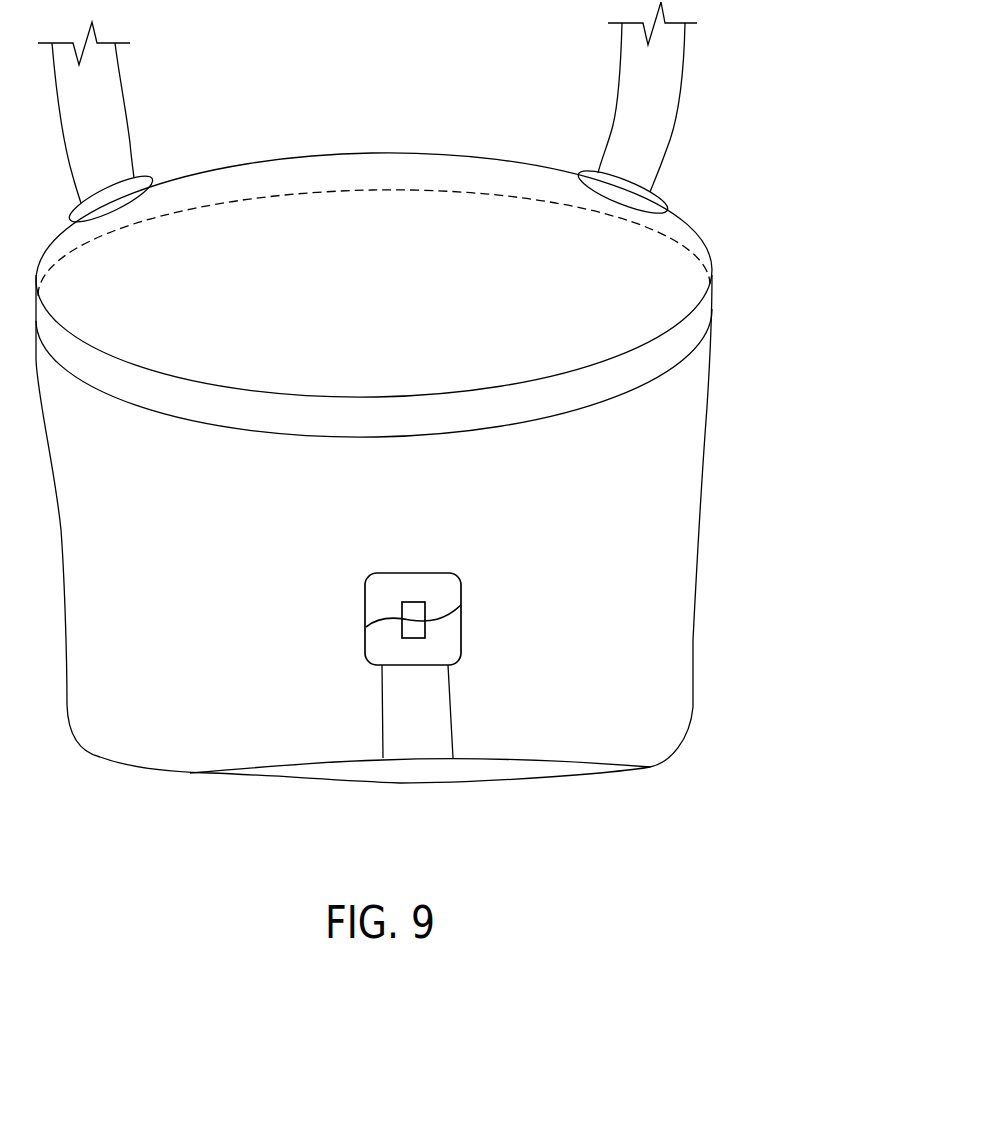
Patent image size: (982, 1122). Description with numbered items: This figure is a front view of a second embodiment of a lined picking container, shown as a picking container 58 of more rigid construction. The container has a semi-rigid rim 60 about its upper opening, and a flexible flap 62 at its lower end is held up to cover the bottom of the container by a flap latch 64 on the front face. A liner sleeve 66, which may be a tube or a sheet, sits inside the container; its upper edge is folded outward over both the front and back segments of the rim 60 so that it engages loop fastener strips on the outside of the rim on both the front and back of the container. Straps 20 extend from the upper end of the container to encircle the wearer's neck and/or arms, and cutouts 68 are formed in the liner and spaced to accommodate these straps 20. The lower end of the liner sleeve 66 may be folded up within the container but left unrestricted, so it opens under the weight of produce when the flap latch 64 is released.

The straps 20 is at (684, 69).
The picking container 58 is at (756, 239).
The semi-rigid rim 60 is at (607, 408).
The flexible flap 62 is at (580, 762).
The flap latch 64 is at (352, 601).
The liner sleeve 66 is at (374, 275).
The cutouts 68 is at (146, 154).